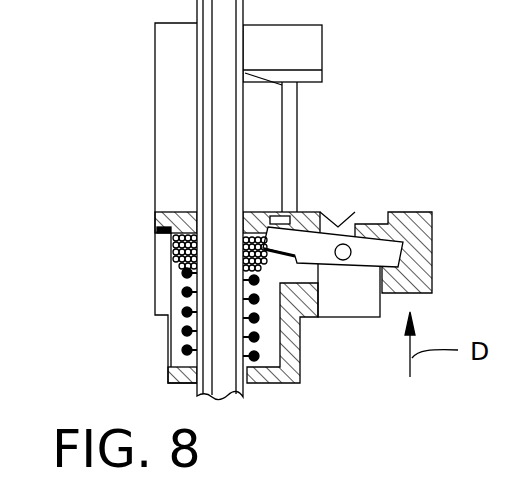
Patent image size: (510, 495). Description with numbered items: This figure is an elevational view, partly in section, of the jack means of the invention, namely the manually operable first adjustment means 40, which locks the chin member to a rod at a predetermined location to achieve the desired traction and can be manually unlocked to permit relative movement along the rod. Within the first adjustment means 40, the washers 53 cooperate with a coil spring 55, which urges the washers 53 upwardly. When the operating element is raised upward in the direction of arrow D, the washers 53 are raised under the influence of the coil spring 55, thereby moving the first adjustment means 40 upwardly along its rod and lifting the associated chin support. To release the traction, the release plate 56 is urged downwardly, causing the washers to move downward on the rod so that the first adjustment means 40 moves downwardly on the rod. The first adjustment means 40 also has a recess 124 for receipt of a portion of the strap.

The first adjustment means 40 is at (140, 92).
The recess 124 is at (312, 120).
The release plate 56 is at (362, 243).
The washers 53 is at (173, 260).
The coil spring 55 is at (187, 332).